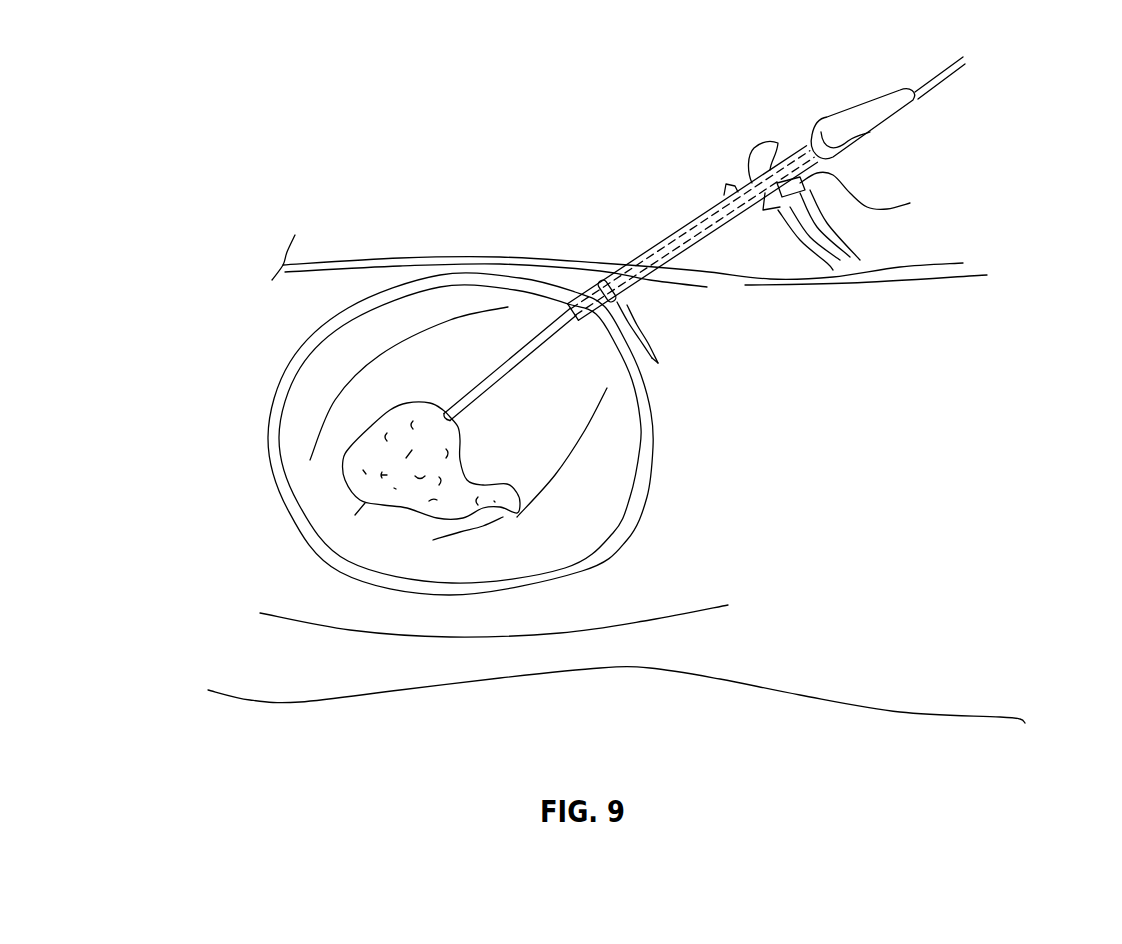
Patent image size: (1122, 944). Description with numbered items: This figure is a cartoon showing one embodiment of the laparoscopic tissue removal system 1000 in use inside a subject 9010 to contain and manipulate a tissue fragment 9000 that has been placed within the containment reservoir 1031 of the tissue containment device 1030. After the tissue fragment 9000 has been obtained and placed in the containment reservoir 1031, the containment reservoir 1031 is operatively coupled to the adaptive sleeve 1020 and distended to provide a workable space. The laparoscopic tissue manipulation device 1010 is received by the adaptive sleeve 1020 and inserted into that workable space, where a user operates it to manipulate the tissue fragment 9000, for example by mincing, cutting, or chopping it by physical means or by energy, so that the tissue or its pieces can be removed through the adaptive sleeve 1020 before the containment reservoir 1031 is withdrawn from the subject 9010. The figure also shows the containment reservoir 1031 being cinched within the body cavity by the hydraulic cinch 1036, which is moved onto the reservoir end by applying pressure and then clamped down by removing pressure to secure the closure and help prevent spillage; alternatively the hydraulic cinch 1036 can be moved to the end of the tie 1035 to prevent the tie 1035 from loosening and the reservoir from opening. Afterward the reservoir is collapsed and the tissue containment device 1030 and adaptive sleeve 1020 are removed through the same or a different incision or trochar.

The laparoscopic tissue removal system 1000 is at (704, 250).
The laparoscopic tissue manipulation device 1010 is at (525, 345).
The adaptive sleeve 1020 is at (661, 238).
The tissue containment device 1030 is at (366, 434).
The containment reservoir 1031 is at (316, 500).
The tie 1035 is at (658, 363).
The hydraulic cinch 1036 is at (602, 282).
The tissue fragment 9000 is at (370, 470).
The subject 9010 is at (862, 355).